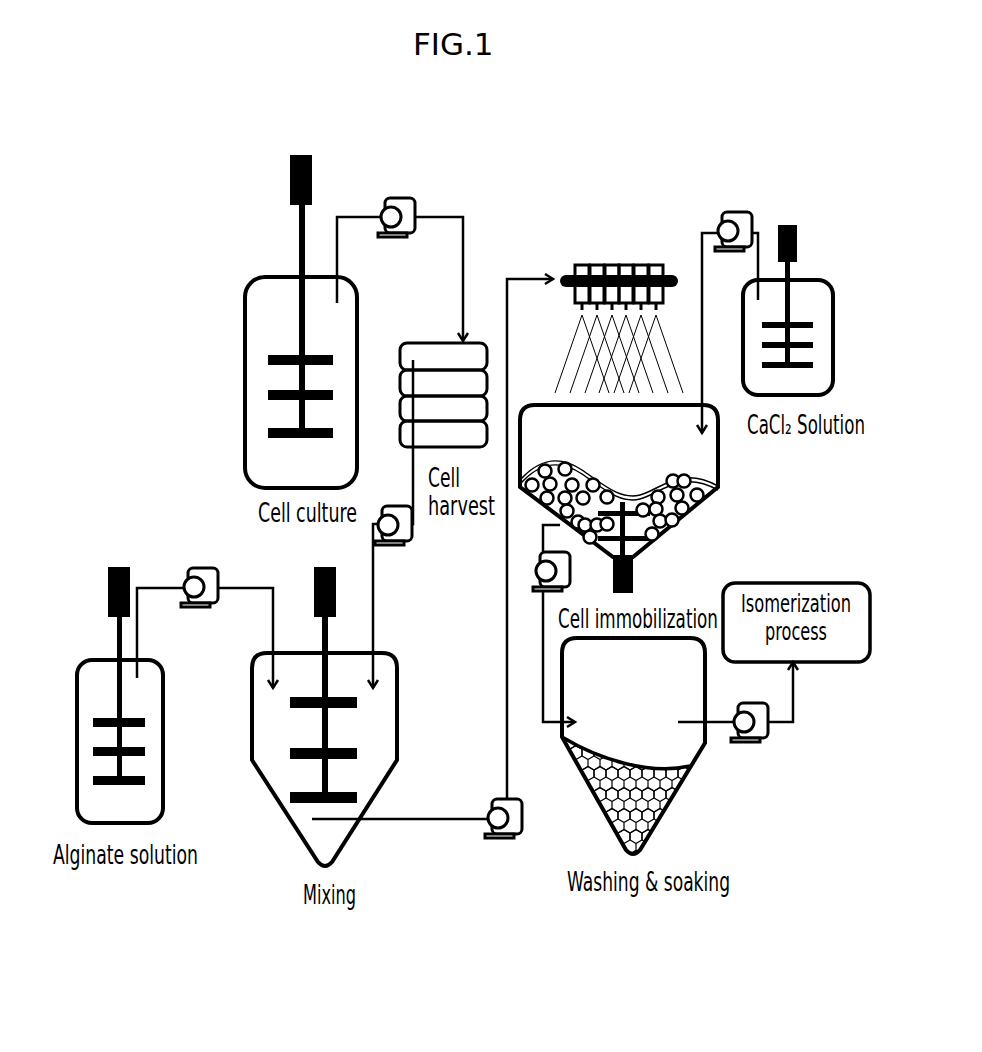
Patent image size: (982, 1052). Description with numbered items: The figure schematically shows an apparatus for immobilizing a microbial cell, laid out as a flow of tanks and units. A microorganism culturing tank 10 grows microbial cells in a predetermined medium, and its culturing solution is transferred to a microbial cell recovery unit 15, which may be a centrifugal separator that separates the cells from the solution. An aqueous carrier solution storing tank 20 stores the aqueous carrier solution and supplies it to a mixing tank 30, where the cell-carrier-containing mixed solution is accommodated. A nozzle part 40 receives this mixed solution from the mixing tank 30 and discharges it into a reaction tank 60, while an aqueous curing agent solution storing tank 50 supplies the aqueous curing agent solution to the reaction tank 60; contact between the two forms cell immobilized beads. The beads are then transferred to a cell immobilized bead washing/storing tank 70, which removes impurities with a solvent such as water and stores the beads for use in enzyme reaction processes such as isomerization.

The microorganism culturing tank 10 is at (245, 345).
The microbial cell recovery unit 15 is at (427, 343).
The aqueous carrier solution storing tank 20 is at (163, 700).
The mixing tank 30 is at (398, 718).
The nozzle part 40 is at (608, 264).
The aqueous curing agent solution storing tank 50 is at (816, 280).
The reaction tank 60 is at (720, 473).
The cell immobilized bead washing/storing tank 70 is at (697, 770).